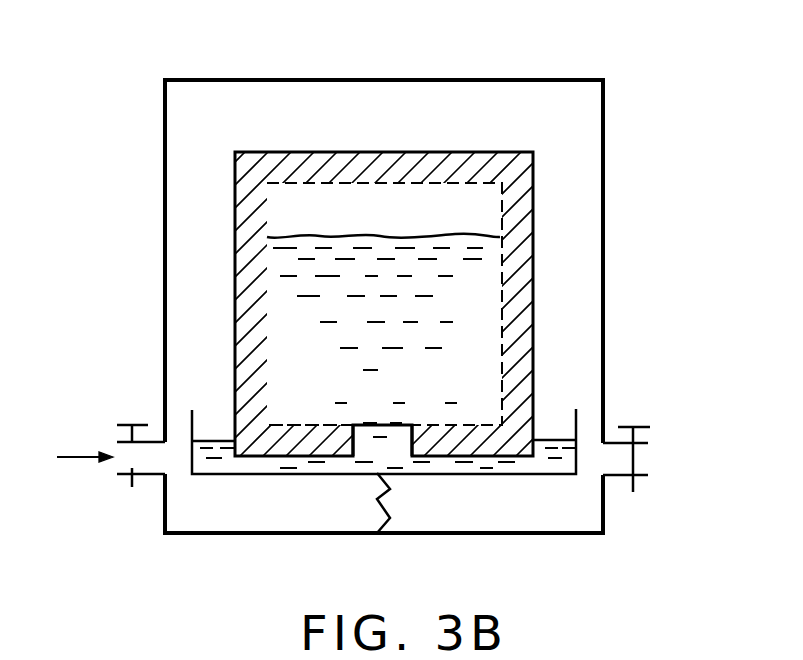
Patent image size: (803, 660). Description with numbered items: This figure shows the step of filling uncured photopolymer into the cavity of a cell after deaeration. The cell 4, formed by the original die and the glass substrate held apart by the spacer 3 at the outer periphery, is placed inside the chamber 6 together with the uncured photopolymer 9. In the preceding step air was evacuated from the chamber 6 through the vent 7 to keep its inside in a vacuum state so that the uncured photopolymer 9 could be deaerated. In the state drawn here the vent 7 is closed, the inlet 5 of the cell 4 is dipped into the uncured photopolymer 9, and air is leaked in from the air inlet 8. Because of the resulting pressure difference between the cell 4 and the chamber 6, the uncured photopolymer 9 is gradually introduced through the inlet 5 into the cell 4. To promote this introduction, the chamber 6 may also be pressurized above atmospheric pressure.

The spacer 3 is at (505, 153).
The cell 4 is at (540, 220).
The inlet 5 is at (393, 437).
The chamber 6 is at (605, 157).
The vent 7 is at (610, 440).
The air inlet 8 is at (157, 440).
The uncured 2P 9 is at (483, 317).